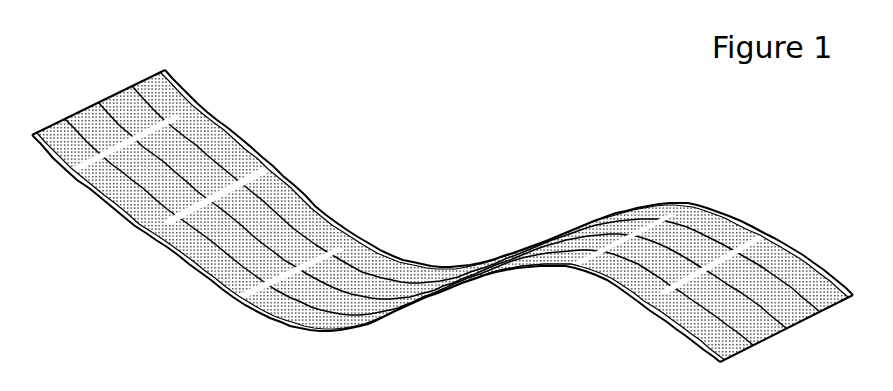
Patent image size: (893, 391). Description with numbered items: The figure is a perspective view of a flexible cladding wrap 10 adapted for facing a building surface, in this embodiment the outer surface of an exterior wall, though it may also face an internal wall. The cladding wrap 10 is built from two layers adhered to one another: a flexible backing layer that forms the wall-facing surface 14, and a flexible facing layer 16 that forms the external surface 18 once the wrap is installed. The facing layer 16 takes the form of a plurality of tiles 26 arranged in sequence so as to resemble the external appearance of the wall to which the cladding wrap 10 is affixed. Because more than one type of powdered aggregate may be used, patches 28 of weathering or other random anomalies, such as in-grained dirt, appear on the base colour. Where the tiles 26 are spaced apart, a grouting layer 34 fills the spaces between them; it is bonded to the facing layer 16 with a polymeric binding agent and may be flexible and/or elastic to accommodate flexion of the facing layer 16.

The flexible cladding wrap 10 is at (800, 181).
The wall-facing surface 14 is at (527, 270).
The flexible facing layer 16 is at (86, 80).
The external surface 18 is at (545, 185).
The tiles 26 is at (145, 100).
The patches 28 is at (334, 192).
The grouting layer 34 is at (180, 188).